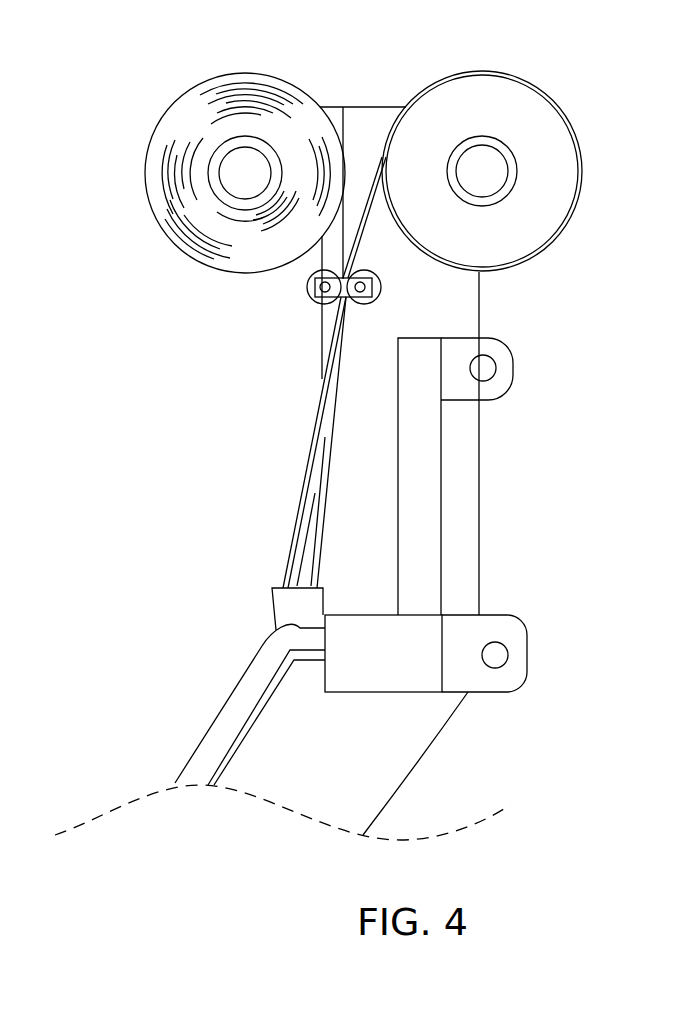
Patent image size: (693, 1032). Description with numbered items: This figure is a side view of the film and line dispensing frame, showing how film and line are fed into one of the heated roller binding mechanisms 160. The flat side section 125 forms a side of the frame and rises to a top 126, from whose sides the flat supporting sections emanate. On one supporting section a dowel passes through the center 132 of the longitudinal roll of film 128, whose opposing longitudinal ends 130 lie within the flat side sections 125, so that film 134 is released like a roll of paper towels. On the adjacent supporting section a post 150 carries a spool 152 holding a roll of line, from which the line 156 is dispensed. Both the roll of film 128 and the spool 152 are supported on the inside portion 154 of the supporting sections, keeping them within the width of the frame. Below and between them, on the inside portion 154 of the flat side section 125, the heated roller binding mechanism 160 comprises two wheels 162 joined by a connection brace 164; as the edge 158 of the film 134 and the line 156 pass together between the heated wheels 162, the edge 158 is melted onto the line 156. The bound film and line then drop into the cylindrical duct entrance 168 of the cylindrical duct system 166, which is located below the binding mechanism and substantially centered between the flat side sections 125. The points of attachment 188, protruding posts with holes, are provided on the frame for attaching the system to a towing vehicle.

The flat side section 125 is at (444, 325).
The top 126 is at (382, 107).
The longitudinal roll of film 128 is at (143, 165).
The opposing longitudinal end 130 is at (178, 228).
The center 132 is at (243, 165).
The film 134 is at (384, 165).
The post 150 is at (482, 166).
The spool 152 is at (555, 188).
The inside portion 154 is at (345, 101).
The line 156 is at (370, 250).
The edge 158 is at (178, 110).
The heated roller binding mechanism 160 is at (395, 325).
The wheel 162 is at (318, 304).
The connection brace 164 is at (357, 300).
The cylindrical duct system 166 is at (253, 672).
The cylindrical duct entrance 168 is at (292, 584).
The point of attachment 188 is at (513, 368).